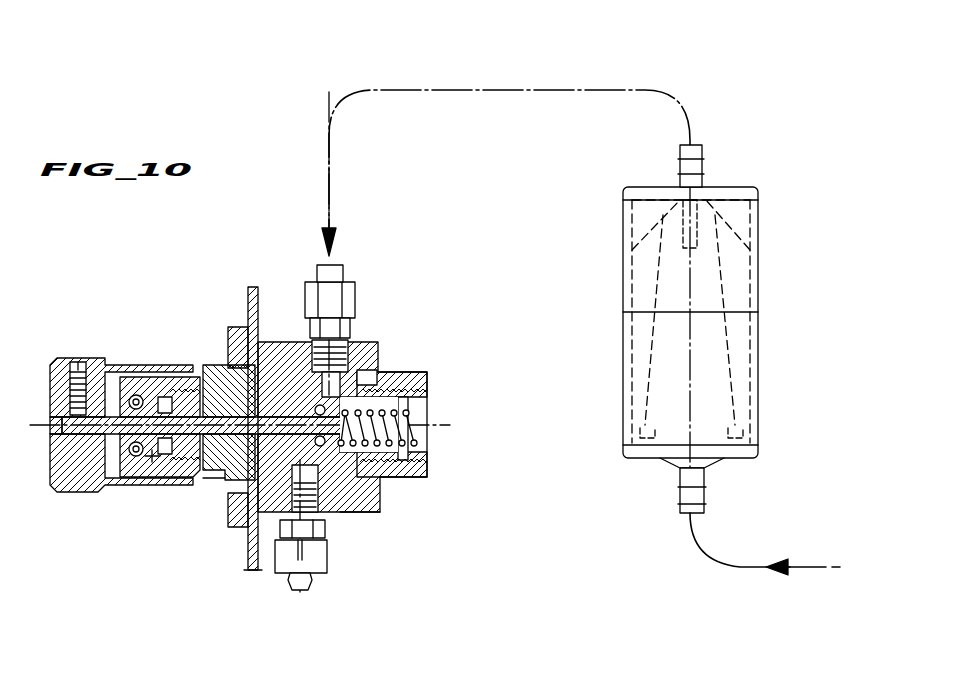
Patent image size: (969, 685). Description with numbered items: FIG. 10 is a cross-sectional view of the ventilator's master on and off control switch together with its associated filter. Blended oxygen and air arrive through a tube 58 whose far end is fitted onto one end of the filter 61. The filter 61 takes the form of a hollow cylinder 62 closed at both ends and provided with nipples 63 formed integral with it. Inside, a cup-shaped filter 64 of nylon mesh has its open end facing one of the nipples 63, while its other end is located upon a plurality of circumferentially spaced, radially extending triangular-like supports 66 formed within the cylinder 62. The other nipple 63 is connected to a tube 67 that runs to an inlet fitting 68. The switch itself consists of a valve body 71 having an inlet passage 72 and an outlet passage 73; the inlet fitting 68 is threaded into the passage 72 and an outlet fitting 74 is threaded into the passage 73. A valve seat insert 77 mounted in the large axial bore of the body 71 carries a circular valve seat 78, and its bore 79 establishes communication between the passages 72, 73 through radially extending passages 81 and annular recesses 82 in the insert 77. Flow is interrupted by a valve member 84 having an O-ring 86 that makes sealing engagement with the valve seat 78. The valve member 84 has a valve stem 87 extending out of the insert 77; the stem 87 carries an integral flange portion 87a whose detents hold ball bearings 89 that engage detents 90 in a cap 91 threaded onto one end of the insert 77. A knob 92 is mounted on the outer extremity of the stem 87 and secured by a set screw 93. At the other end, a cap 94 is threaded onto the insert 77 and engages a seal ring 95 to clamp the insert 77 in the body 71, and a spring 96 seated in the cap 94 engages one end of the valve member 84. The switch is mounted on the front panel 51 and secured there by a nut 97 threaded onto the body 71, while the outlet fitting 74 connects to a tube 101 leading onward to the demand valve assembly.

The front panel 51 is at (247, 300).
The tube 58 is at (708, 540).
The filter 61 is at (768, 323).
The hollow cylinder 62 is at (758, 386).
The nipples 63 is at (703, 166).
The cup-shaped filter 64 is at (752, 294).
The triangular-like supports 66 is at (742, 214).
The tube 67 is at (464, 90).
The inlet fitting 68 is at (356, 304).
The valve body 71 is at (378, 502).
The inlet passage 72 is at (346, 362).
The outlet passage 73 is at (309, 474).
The outlet fitting 74 is at (313, 534).
The valve seat insert 77 is at (362, 512).
The circular valve seat 78 is at (314, 404).
The bore 79 is at (240, 505).
The radially extending passages 81 is at (222, 480).
The annular recesses 82 is at (284, 364).
The valve member 84 is at (392, 426).
The O-ring 86 is at (266, 405).
The valve stem 87 is at (97, 434).
The flange portion 87a is at (150, 462).
The ball bearings 89 is at (162, 396).
The detents 90 is at (134, 396).
The cap 91 is at (157, 395).
The knob 92 is at (78, 490).
The set screw 93 is at (80, 362).
The cap 94 is at (429, 398).
The seal ring 95 is at (381, 371).
The spring 96 is at (396, 392).
The nut 97 is at (245, 532).
The tube 101 is at (332, 583).